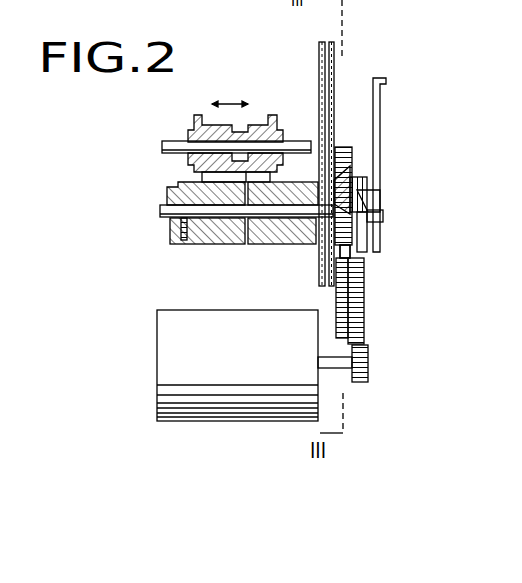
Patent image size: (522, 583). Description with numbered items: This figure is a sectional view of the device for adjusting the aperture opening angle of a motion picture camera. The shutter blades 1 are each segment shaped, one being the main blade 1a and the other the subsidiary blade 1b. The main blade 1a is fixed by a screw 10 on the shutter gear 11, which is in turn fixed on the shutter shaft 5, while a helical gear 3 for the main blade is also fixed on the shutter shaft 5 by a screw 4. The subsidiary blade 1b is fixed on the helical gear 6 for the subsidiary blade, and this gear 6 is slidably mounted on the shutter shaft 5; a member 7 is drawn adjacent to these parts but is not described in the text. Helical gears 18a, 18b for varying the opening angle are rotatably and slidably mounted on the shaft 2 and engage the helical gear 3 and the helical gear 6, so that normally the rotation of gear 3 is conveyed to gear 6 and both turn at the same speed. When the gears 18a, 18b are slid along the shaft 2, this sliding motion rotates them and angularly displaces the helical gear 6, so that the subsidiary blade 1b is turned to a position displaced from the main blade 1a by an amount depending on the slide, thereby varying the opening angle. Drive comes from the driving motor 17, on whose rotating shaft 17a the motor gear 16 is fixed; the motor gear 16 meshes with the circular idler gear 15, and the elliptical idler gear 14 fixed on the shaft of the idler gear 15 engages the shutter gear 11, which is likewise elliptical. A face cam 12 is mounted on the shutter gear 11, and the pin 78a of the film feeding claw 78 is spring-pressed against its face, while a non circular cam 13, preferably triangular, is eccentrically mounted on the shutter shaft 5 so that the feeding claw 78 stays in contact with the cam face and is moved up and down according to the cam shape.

The shutter blades 1 is at (330, 29).
The main blade 1a is at (319, 56).
The subsidiary blade 1b is at (334, 70).
The shaft 2 is at (170, 145).
The helical gear for the main blade 3 is at (176, 186).
The screw 4 is at (185, 245).
The shutter shaft 5 is at (162, 212).
The helical gear for the subsidiary blade 6 is at (266, 245).
The clutch member 7 is at (319, 192).
The screw 10 is at (344, 170).
The shutter gear 11 is at (340, 234).
The face cam 12 is at (357, 226).
The non circular cam 13 is at (380, 192).
The idler gear 14 is at (334, 295).
The idler gear 15 is at (352, 302).
The motor gear 16 is at (368, 366).
The driving motor 17 is at (148, 338).
The rotating shaft 17a is at (340, 364).
The helical gear for varying the opening angle 18a is at (194, 116).
The helical gear for varying the opening angle 18b is at (274, 116).
The film feeding claw 78 is at (380, 131).
The pin 78a is at (380, 206).